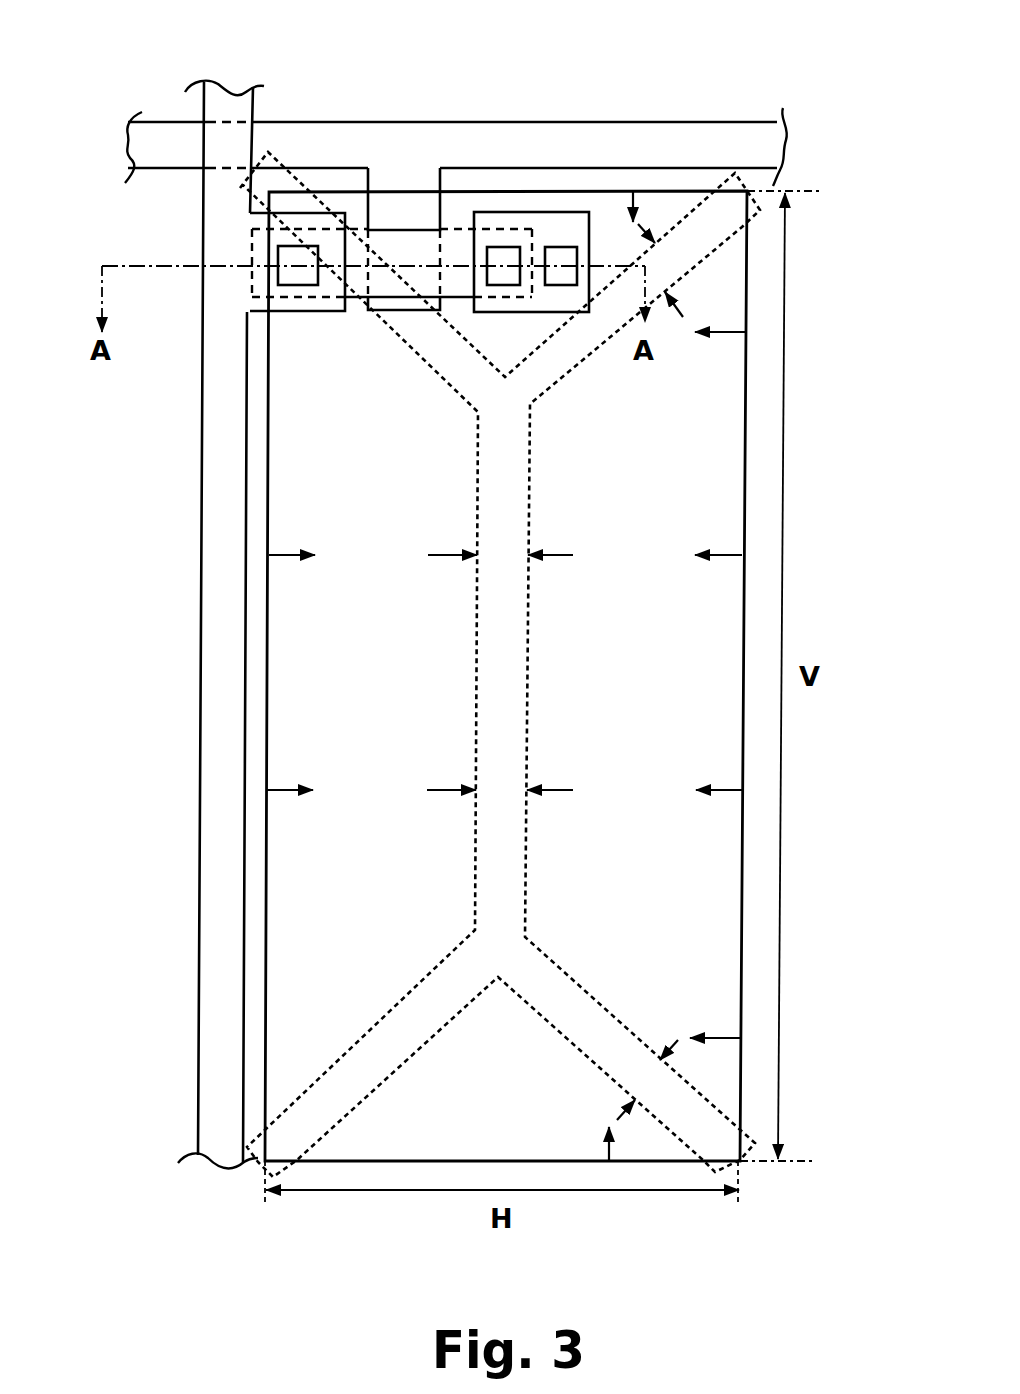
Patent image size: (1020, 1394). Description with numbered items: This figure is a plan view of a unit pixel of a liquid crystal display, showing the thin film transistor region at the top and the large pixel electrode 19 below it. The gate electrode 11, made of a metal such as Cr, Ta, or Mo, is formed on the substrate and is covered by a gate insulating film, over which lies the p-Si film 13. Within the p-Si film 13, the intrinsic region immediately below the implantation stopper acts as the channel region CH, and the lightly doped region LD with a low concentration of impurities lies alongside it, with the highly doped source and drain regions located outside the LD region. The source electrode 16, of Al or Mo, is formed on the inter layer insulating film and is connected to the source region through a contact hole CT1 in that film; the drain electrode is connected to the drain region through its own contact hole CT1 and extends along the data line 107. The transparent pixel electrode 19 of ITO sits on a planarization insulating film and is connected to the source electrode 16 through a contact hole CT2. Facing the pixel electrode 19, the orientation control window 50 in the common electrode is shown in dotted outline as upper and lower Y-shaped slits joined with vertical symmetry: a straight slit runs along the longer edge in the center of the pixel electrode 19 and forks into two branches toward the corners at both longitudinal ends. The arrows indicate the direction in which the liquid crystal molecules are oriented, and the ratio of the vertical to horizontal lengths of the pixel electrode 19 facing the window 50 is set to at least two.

The data line 107 is at (253, 207).
The p-Si film 13 is at (357, 230).
The gate electrode 11 is at (413, 198).
The source electrode 16 is at (570, 233).
The pixel electrode 19 is at (698, 316).
The orientation control window 50 is at (503, 658).
The channel region CH is at (382, 228).
The contact hole CT1 is at (495, 253).
The contact hole CT2 is at (570, 253).
The lightly doped region LD is at (343, 283).